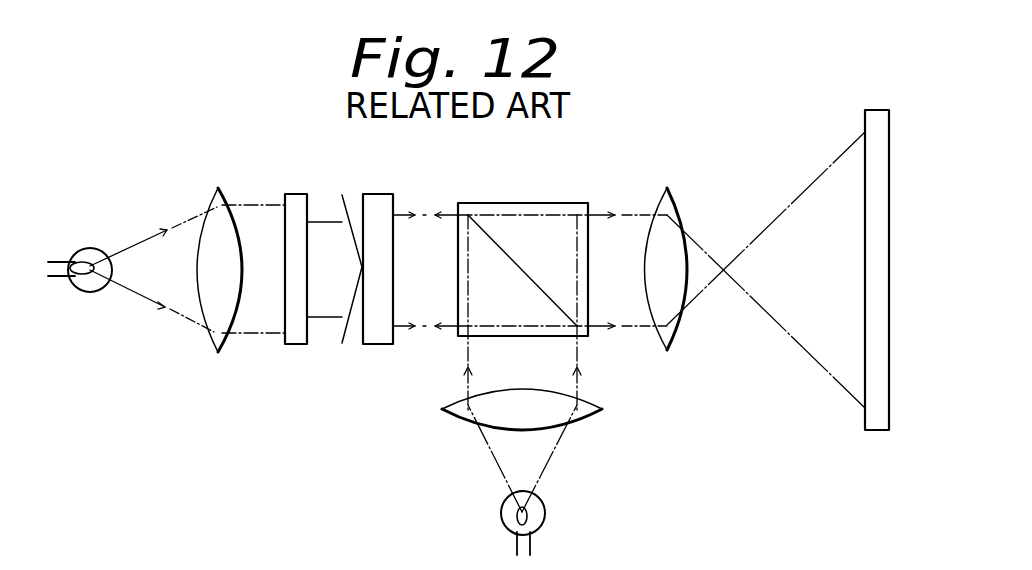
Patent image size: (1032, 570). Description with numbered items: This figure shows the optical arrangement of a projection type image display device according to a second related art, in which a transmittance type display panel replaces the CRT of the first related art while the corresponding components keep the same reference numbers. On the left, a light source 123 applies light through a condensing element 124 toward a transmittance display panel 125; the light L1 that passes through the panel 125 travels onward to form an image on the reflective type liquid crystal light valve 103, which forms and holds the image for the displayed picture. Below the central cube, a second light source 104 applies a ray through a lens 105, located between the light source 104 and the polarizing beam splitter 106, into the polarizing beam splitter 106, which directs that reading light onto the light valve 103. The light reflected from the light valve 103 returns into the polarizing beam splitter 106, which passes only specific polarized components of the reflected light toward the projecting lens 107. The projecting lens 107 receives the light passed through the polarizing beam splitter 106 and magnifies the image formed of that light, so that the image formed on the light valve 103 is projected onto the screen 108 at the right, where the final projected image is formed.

The light source 123 is at (89, 247).
The condenser lens 124 is at (221, 187).
The transmittance display panel 125 is at (301, 193).
The light L1 is at (320, 320).
The reflective type light valve 103 is at (382, 194).
The polarizing beam splitter 106 is at (508, 203).
The projecting lens 107 is at (668, 190).
The screen 108 is at (878, 110).
The lens 105 is at (585, 415).
The light source 104 is at (545, 518).